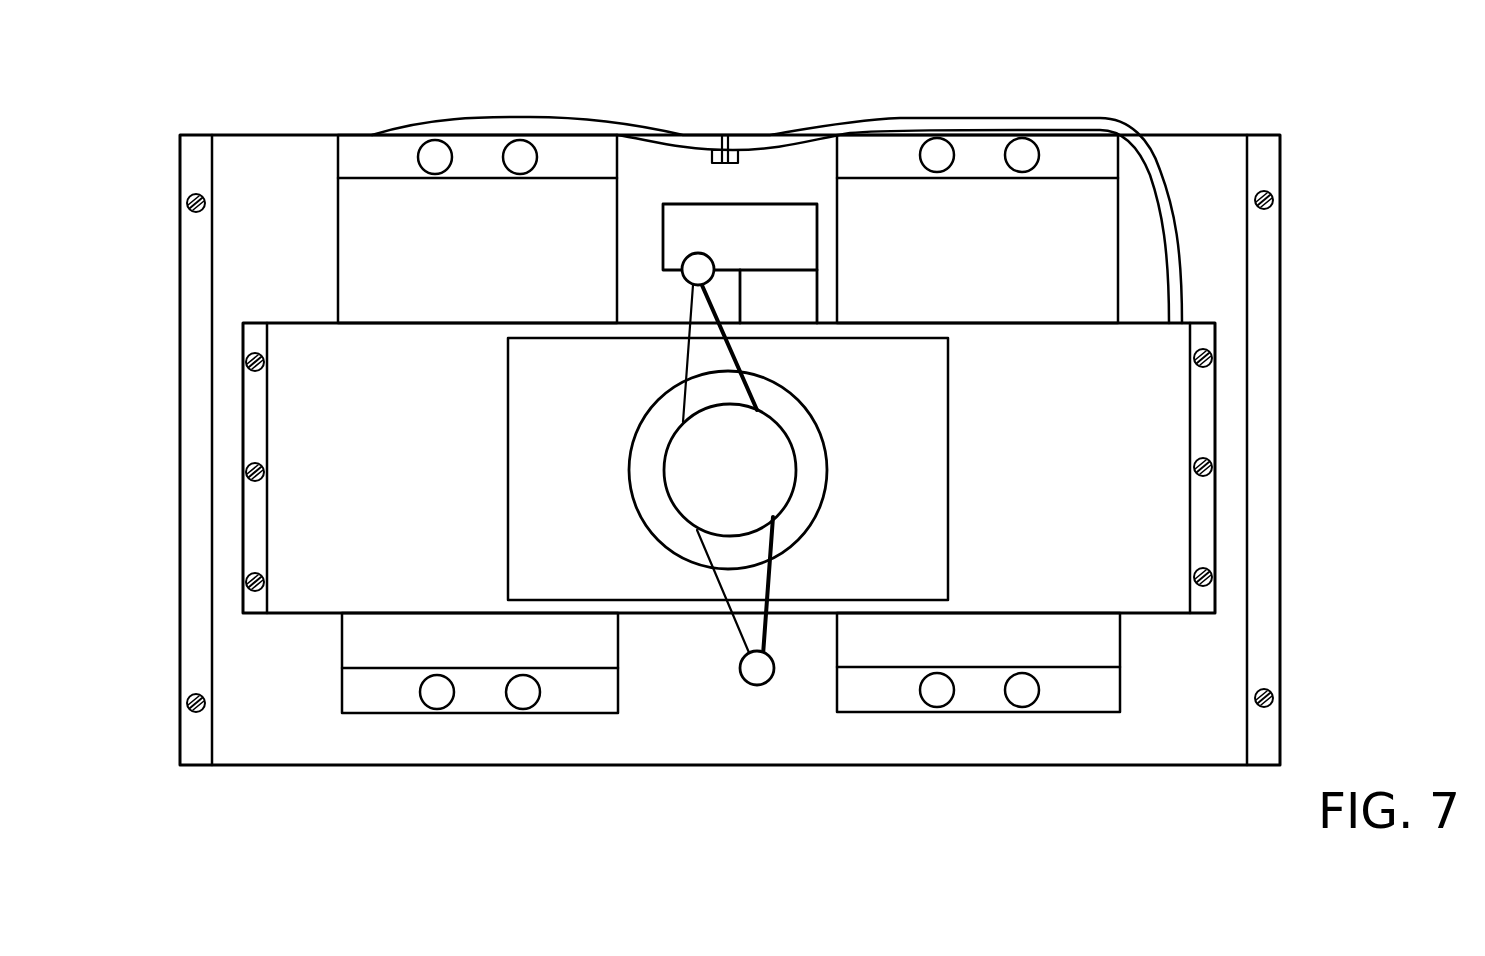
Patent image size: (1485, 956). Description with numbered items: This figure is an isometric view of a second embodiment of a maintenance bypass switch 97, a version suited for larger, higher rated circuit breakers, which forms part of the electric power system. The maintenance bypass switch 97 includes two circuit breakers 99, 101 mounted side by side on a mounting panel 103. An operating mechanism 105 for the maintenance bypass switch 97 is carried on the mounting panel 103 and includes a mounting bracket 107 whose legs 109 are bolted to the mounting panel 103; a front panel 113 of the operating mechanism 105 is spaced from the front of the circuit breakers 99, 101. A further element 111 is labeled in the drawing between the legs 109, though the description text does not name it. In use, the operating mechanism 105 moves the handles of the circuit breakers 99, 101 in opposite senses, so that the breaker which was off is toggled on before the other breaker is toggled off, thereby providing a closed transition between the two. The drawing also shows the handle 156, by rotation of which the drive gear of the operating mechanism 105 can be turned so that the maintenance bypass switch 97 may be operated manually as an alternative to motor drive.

The maintenance bypass switch 97 is at (116, 677).
The circuit breaker 99 is at (978, 153).
The circuit breaker 101 is at (392, 197).
The mounting panel 103 is at (1193, 177).
The operating mechanism 105 is at (1308, 546).
The mounting bracket 107 is at (1105, 568).
The legs 109 is at (267, 402).
The plate 111 is at (243, 343).
The front panel 113 is at (333, 555).
The handle 156 is at (750, 681).